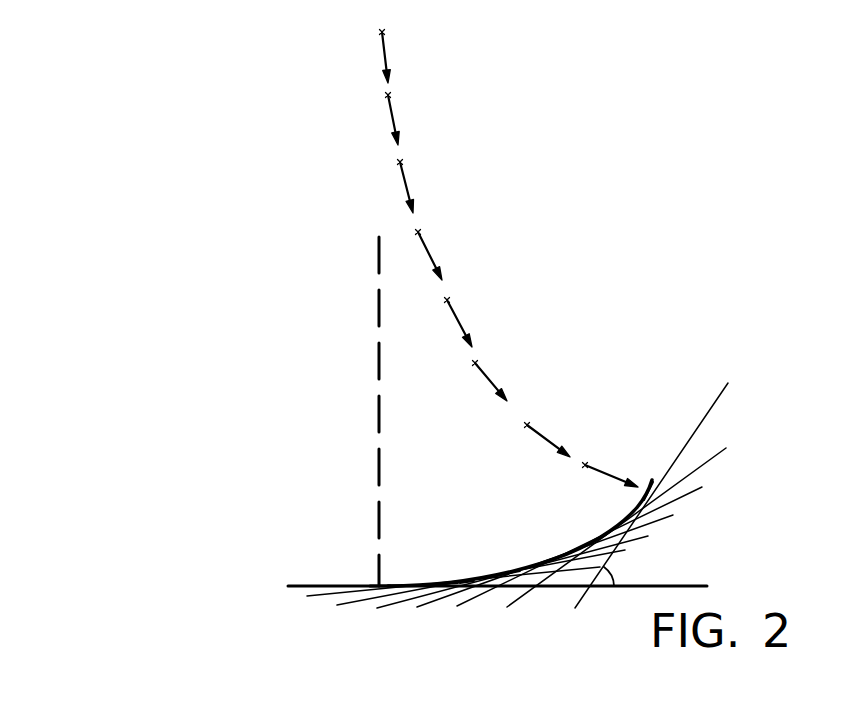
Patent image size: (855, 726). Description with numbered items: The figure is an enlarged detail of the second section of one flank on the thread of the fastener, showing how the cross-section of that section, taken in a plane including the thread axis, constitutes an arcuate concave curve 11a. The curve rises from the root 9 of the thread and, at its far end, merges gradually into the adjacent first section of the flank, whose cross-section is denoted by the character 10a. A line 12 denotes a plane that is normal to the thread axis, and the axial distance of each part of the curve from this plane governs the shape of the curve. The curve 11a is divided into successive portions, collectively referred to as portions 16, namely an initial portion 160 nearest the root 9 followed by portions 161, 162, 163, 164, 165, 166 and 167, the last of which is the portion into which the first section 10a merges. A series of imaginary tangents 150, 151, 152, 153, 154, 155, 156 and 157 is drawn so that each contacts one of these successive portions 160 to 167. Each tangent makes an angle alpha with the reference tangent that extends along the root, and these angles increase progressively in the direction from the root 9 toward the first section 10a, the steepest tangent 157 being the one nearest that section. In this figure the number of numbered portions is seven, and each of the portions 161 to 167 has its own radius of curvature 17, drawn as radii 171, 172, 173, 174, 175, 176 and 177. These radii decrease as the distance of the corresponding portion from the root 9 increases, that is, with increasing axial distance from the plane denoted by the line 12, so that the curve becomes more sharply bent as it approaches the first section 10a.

The root 9 is at (358, 560).
The cross-section of first section 10a is at (643, 447).
The arcuate concave curve 11a is at (449, 556).
The line denoting a plane 12 is at (356, 362).
The imaginary tangent 150 is at (325, 585).
The imaginary tangent 151 is at (307, 596).
The imaginary tangent 152 is at (337, 605).
The imaginary tangent 153 is at (377, 608).
The imaginary tangent 154 is at (417, 607).
The imaginary tangent 155 is at (457, 606).
The imaginary tangent 156 is at (507, 607).
The imaginary tangent 157 is at (575, 608).
The portion of the curve 16 is at (497, 548).
The portion of the curve 160 is at (392, 585).
The portion of the curve 161 is at (437, 584).
The portion of the curve 162 is at (467, 586).
The portion of the curve 163 is at (513, 572).
The portion of the curve 164 is at (546, 563).
The portion of the curve 165 is at (570, 550).
The portion of the curve 166 is at (612, 530).
The portion of the curve 167 is at (644, 494).
The radius of curvature 17 is at (593, 475).
The radius of curvature 171 is at (380, 48).
The radius of curvature 172 is at (388, 122).
The radius of curvature 173 is at (402, 189).
The radius of curvature 174 is at (426, 258).
The radius of curvature 175 is at (455, 326).
The radius of curvature 176 is at (487, 385).
The radius of curvature 177 is at (548, 441).